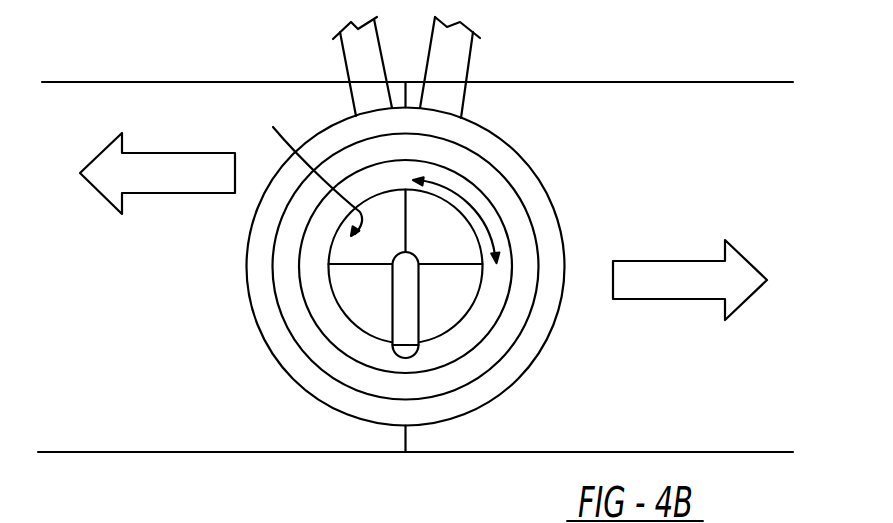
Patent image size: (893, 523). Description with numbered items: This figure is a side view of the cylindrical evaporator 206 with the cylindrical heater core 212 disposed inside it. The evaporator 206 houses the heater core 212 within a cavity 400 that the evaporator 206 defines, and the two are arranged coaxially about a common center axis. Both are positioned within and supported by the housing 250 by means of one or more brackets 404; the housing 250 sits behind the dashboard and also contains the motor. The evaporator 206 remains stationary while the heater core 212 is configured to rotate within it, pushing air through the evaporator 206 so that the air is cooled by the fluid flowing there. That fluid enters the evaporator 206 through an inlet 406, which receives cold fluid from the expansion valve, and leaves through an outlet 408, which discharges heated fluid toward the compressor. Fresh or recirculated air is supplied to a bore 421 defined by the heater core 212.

The housing 250 is at (597, 82).
The inlet 406 is at (345, 60).
The outlet 408 is at (470, 55).
The evaporator 206 is at (537, 167).
The cavity 400 is at (512, 212).
The heater core 212 is at (513, 263).
The bracket 404 is at (407, 212).
The bore 421 is at (304, 165).